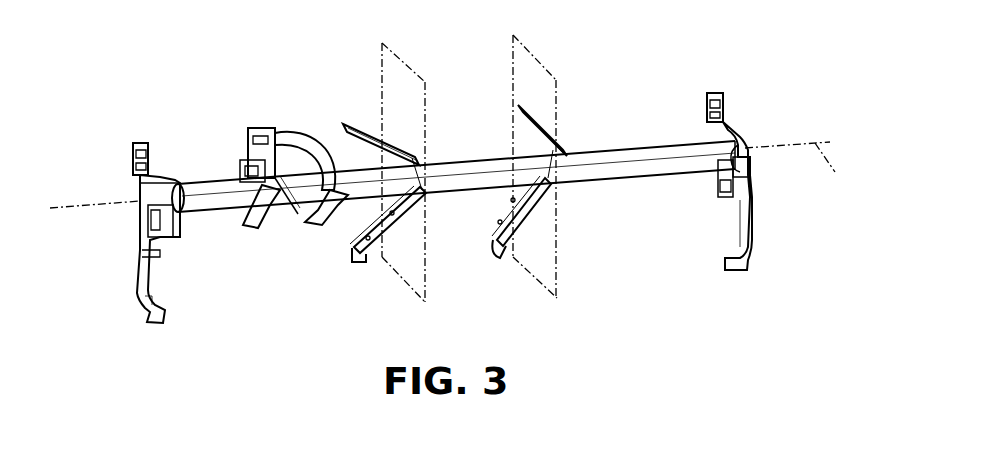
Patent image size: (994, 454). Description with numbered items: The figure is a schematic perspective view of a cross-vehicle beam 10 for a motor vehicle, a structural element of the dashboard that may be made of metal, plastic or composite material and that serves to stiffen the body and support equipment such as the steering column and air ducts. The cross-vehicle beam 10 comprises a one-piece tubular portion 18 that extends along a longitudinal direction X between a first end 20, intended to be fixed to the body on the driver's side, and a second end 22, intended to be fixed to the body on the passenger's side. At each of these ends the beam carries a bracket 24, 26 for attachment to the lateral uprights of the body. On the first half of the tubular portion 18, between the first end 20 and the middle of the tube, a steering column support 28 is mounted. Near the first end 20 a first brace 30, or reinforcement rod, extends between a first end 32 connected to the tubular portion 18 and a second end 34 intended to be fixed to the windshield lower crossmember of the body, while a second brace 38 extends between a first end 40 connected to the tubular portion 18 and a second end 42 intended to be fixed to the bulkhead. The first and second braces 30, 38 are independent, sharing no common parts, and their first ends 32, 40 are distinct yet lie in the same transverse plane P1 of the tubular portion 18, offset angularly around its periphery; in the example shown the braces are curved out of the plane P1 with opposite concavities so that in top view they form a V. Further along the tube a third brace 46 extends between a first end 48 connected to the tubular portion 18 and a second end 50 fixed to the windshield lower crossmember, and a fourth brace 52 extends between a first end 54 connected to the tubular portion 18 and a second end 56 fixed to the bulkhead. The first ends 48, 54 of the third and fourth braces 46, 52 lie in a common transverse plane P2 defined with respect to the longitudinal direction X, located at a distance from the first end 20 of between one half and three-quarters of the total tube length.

The cross-vehicle beam 10 is at (220, 83).
The tubular portion 18 is at (652, 165).
The first end 20 is at (140, 184).
The second end 22 is at (748, 132).
The bracket 24 is at (133, 153).
The bracket 26 is at (724, 100).
The steering column support 28 is at (250, 138).
The first brace 30 is at (377, 133).
The first end of the first brace 32 is at (420, 158).
The second end of the first brace 34 is at (345, 127).
The second brace 38 is at (394, 215).
The first end of the second brace 40 is at (421, 192).
The second end of the second brace 42 is at (365, 242).
The third brace 46 is at (536, 127).
The first end of the third brace 48 is at (560, 145).
The second end of the third brace 50 is at (520, 113).
The fourth brace 52 is at (520, 212).
The first end of the fourth brace 54 is at (546, 183).
The second end of the fourth brace 56 is at (493, 232).
The transverse plane P1 is at (402, 62).
The transverse plane P2 is at (535, 55).
The longitudinal direction X is at (449, 175).